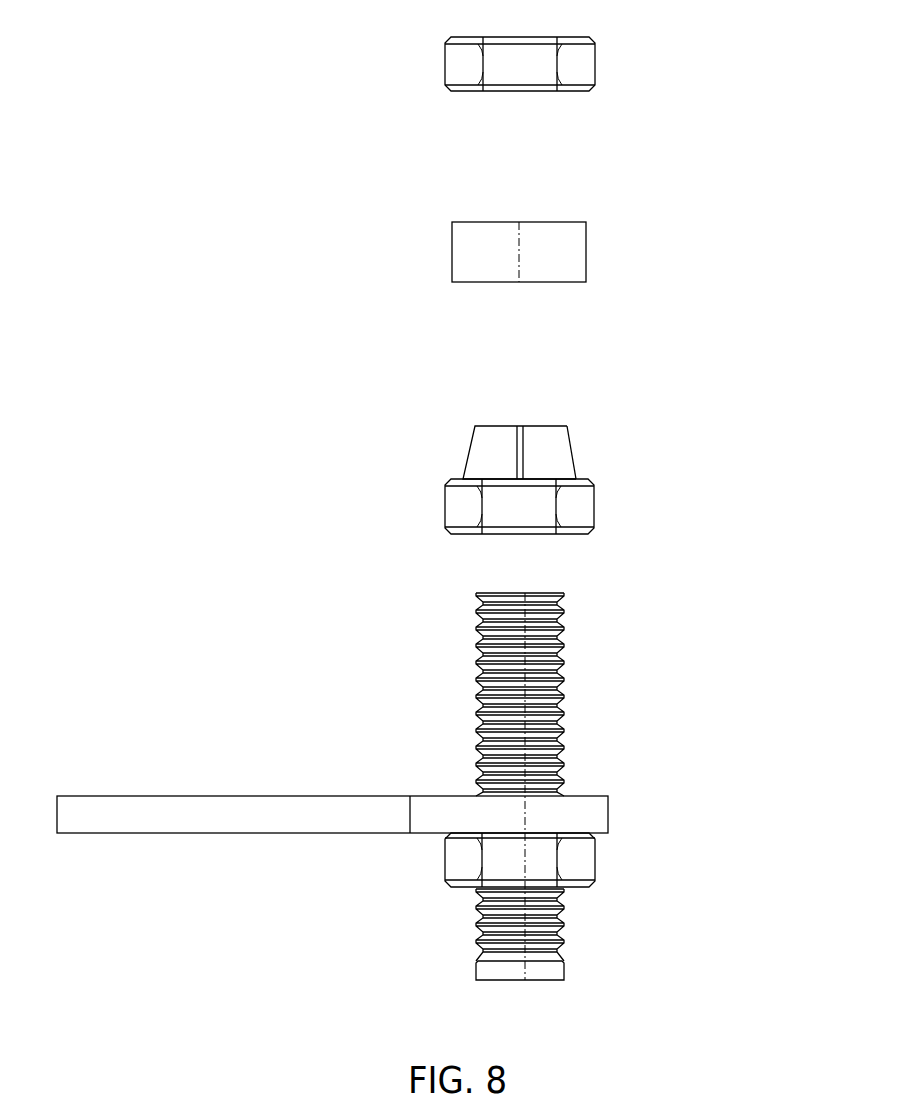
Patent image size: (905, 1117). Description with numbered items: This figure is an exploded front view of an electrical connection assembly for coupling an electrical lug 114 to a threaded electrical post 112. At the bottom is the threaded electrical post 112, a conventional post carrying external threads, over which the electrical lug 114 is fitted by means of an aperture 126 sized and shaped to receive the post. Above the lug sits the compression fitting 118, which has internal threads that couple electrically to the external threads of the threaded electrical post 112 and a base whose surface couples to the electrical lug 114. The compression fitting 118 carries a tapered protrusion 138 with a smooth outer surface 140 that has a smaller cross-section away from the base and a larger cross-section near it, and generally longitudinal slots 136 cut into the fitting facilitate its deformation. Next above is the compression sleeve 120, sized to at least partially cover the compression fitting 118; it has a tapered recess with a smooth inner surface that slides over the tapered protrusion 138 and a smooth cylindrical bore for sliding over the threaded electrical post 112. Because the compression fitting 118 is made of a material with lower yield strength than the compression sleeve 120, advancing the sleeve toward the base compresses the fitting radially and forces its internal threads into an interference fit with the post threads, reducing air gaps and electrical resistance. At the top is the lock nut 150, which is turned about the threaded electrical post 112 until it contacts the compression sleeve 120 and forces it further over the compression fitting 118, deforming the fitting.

The lock nut 150 is at (470, 60).
The compression sleeve 120 is at (470, 252).
The tapered protrusion 138 is at (465, 450).
The generally longitudinal slots 136 is at (523, 448).
The smooth outer surface 140 is at (555, 455).
The compression fitting 118 is at (463, 477).
The aperture 126 is at (553, 534).
The electrical lug 114 is at (186, 815).
The threaded electrical post 112 is at (487, 940).